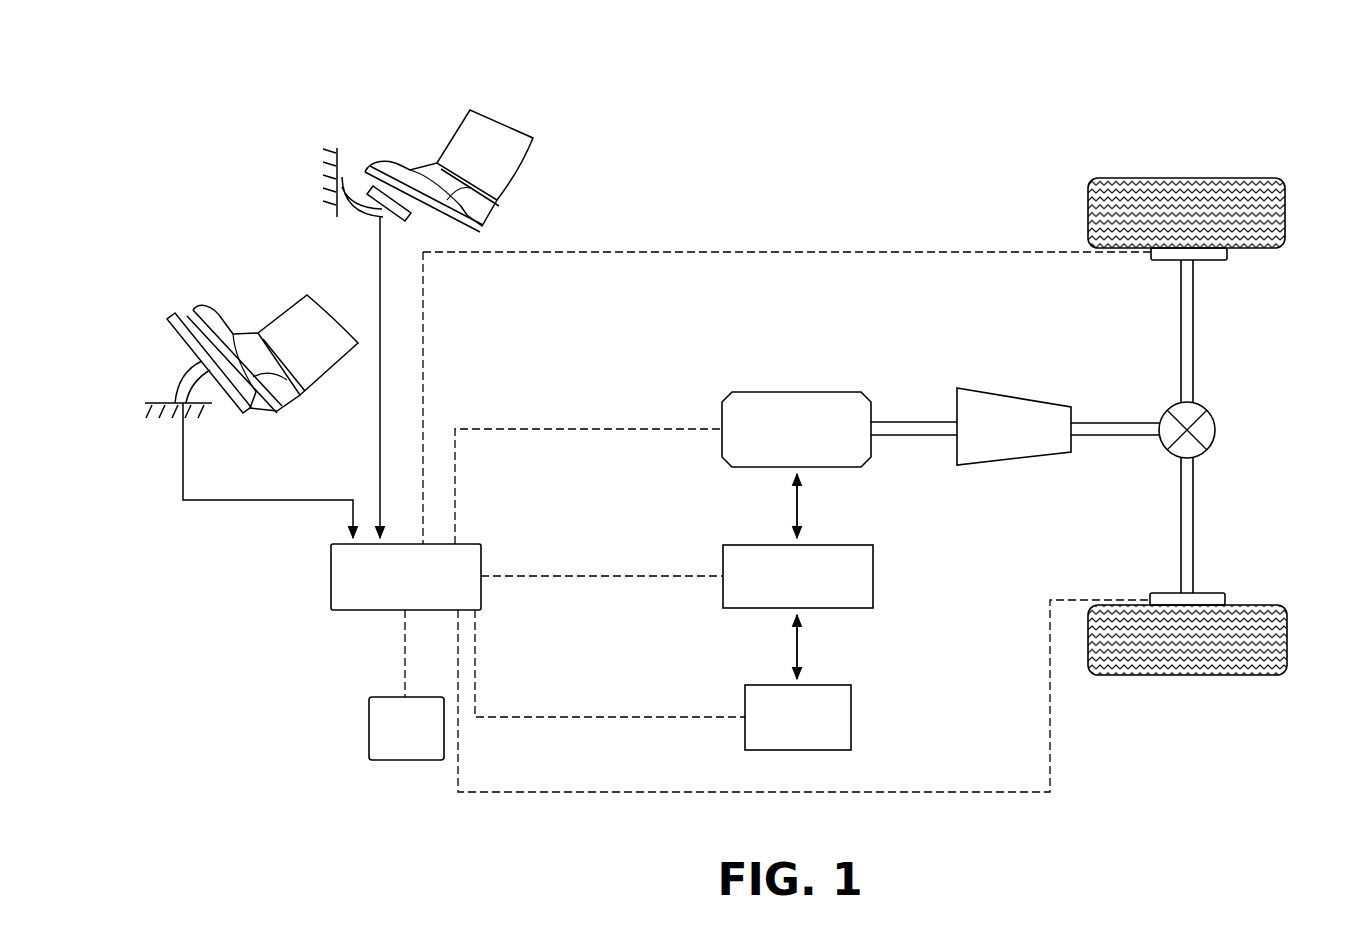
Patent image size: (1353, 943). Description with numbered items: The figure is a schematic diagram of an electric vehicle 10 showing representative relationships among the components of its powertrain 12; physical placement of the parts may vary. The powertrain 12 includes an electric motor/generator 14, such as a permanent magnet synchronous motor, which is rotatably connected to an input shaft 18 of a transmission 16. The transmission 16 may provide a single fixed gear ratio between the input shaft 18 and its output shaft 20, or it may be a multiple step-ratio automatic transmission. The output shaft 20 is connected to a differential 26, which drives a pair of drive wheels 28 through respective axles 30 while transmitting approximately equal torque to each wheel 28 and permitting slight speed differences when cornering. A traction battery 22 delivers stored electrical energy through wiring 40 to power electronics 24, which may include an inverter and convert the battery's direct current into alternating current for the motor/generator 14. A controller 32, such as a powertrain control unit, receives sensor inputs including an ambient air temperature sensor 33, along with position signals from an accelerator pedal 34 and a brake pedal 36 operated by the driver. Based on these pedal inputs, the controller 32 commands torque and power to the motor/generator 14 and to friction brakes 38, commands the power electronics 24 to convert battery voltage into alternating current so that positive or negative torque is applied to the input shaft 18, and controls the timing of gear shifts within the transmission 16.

The electric vehicle 10 is at (968, 96).
The powertrain 12 is at (838, 320).
The electric motor/generator (M/G) 14 is at (722, 413).
The transmission 16 is at (1013, 393).
The input shaft 18 is at (918, 421).
The output shaft 20 is at (1104, 421).
The traction battery 22 is at (745, 700).
The power electronics 24 is at (723, 560).
The differential 26 is at (1216, 428).
The drive wheels 28 is at (1185, 178).
The axles 30 is at (1195, 325).
The controller 32 is at (331, 575).
The ambient air temperature sensor 33 is at (369, 727).
The accelerator pedal 34 is at (227, 282).
The brake pedal 36 is at (402, 119).
The friction brakes 38 is at (1228, 256).
The wiring 40 is at (800, 657).